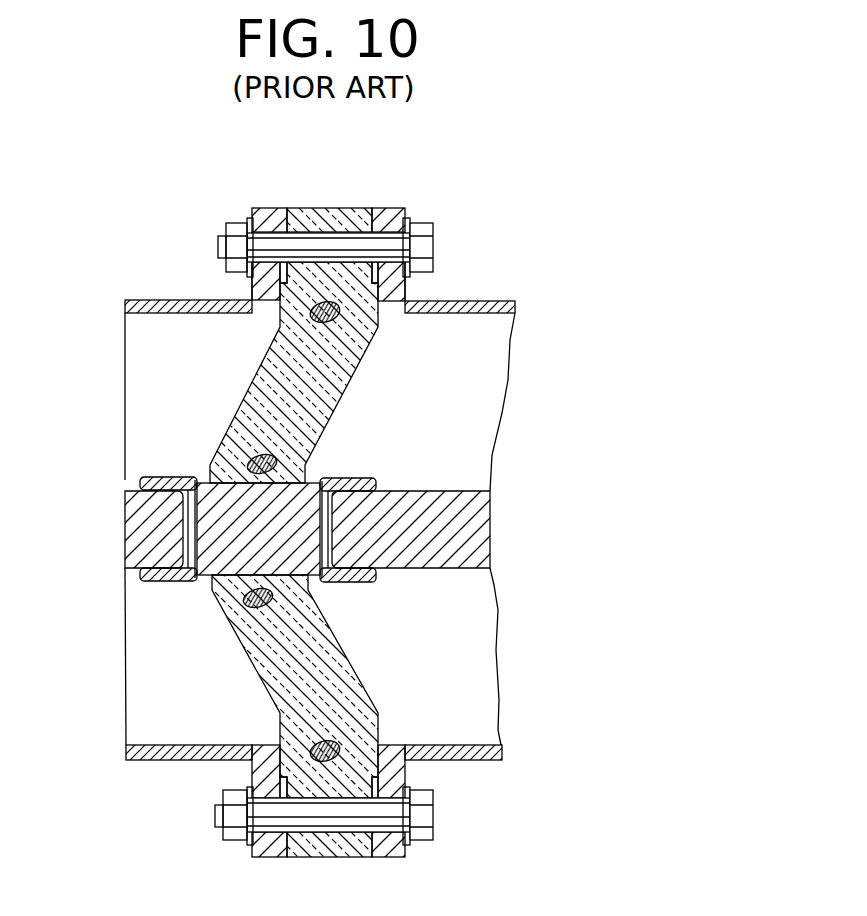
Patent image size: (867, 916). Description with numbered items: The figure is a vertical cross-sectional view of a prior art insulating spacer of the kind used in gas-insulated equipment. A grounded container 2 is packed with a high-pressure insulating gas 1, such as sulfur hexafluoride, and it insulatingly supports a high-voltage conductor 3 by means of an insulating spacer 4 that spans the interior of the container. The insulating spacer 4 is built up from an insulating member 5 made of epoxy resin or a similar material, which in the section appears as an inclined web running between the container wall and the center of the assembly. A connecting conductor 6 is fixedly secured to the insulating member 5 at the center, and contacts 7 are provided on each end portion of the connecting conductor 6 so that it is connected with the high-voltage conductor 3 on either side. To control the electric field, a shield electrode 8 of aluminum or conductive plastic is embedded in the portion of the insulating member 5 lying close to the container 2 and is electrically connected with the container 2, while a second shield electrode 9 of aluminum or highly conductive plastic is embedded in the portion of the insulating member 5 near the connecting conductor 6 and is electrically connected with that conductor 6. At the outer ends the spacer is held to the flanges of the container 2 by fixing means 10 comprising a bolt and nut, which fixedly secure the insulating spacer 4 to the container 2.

The high-pressure insulating gas 1 is at (465, 325).
The grounded container 2 is at (153, 300).
The high-voltage conductor 3 is at (131, 481).
The insulating spacer 4 is at (333, 208).
The insulating member 5 is at (253, 386).
The connecting conductor 6 is at (215, 600).
The contacts 7 is at (167, 475).
The shield electrode 8 is at (334, 348).
The shield electrode 9 is at (260, 452).
The fixing means 10 is at (245, 222).